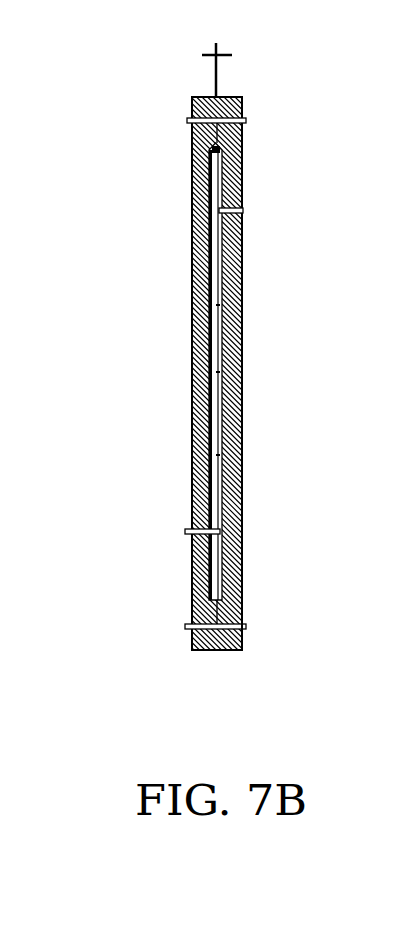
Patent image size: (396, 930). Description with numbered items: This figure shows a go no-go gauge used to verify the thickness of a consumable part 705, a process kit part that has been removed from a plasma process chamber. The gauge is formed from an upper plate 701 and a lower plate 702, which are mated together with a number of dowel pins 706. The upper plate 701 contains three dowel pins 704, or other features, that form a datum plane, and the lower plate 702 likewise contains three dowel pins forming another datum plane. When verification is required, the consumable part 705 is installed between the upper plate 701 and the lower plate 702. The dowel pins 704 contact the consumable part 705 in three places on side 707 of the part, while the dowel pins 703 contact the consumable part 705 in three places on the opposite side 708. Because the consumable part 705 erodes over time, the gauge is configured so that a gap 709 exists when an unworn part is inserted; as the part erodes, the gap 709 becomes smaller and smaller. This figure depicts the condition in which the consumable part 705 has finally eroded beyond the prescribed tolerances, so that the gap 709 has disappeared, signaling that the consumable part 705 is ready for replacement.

The upper plate 701 is at (192, 163).
The lower plate 702 is at (243, 177).
The dowel pins 703 is at (245, 212).
The dowel pins 704 is at (188, 529).
The consumable part 705 is at (220, 310).
The dowel pins 706 is at (245, 118).
The side 707 is at (207, 359).
The side 708 is at (242, 478).
The gap 709 is at (242, 70).